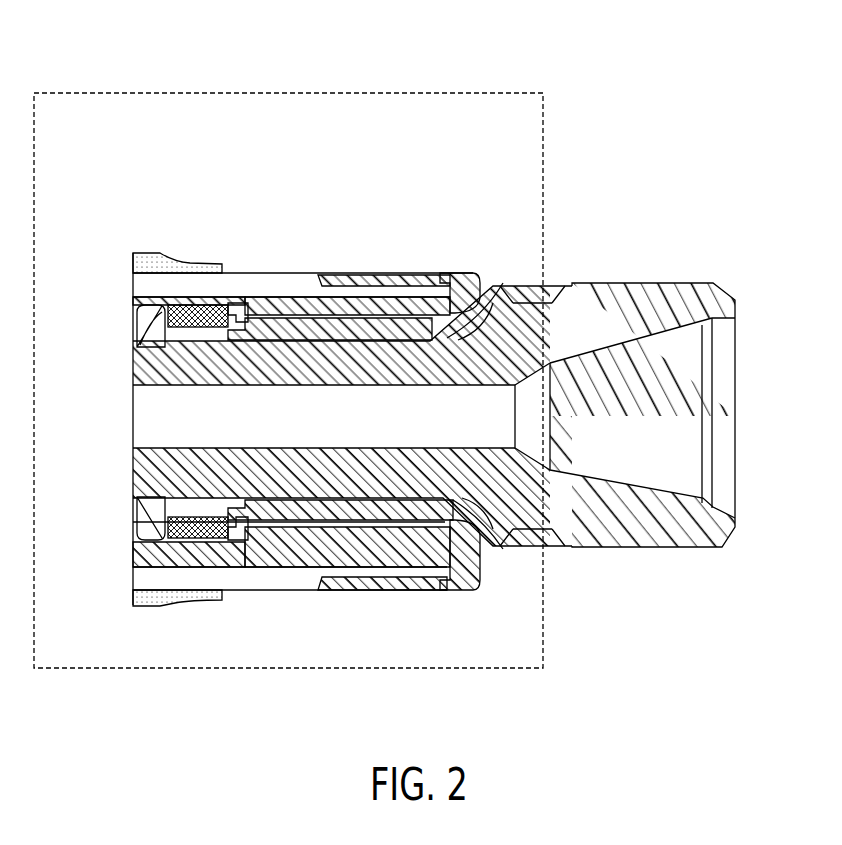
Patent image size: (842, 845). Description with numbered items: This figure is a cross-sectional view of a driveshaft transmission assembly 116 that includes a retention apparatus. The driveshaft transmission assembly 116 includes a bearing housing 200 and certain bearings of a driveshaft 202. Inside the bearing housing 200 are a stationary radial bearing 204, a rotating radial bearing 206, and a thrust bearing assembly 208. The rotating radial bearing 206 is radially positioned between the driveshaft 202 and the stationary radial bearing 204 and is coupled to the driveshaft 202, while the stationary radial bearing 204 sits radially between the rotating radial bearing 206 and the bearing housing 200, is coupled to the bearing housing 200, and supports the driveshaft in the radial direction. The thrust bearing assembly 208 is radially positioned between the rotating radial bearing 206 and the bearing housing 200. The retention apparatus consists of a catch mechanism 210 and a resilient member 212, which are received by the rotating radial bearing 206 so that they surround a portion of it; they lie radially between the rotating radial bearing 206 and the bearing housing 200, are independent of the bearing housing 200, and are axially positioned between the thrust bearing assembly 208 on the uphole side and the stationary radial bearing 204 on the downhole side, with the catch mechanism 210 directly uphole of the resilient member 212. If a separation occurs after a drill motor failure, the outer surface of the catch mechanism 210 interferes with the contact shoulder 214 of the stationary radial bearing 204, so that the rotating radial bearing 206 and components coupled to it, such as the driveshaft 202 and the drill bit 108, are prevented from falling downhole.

The drill bit 108 is at (735, 403).
The driveshaft transmission assembly 116 is at (290, 91).
The bearing housing 200 is at (455, 276).
The driveshaft 202 is at (667, 307).
The stationary radial bearing 204 is at (363, 303).
The rotating radial bearing 206 is at (500, 284).
The thrust bearing assembly 208 is at (137, 330).
The catch mechanism 210 is at (193, 306).
The resilient member 212 is at (233, 305).
The contact shoulder 214 is at (247, 312).